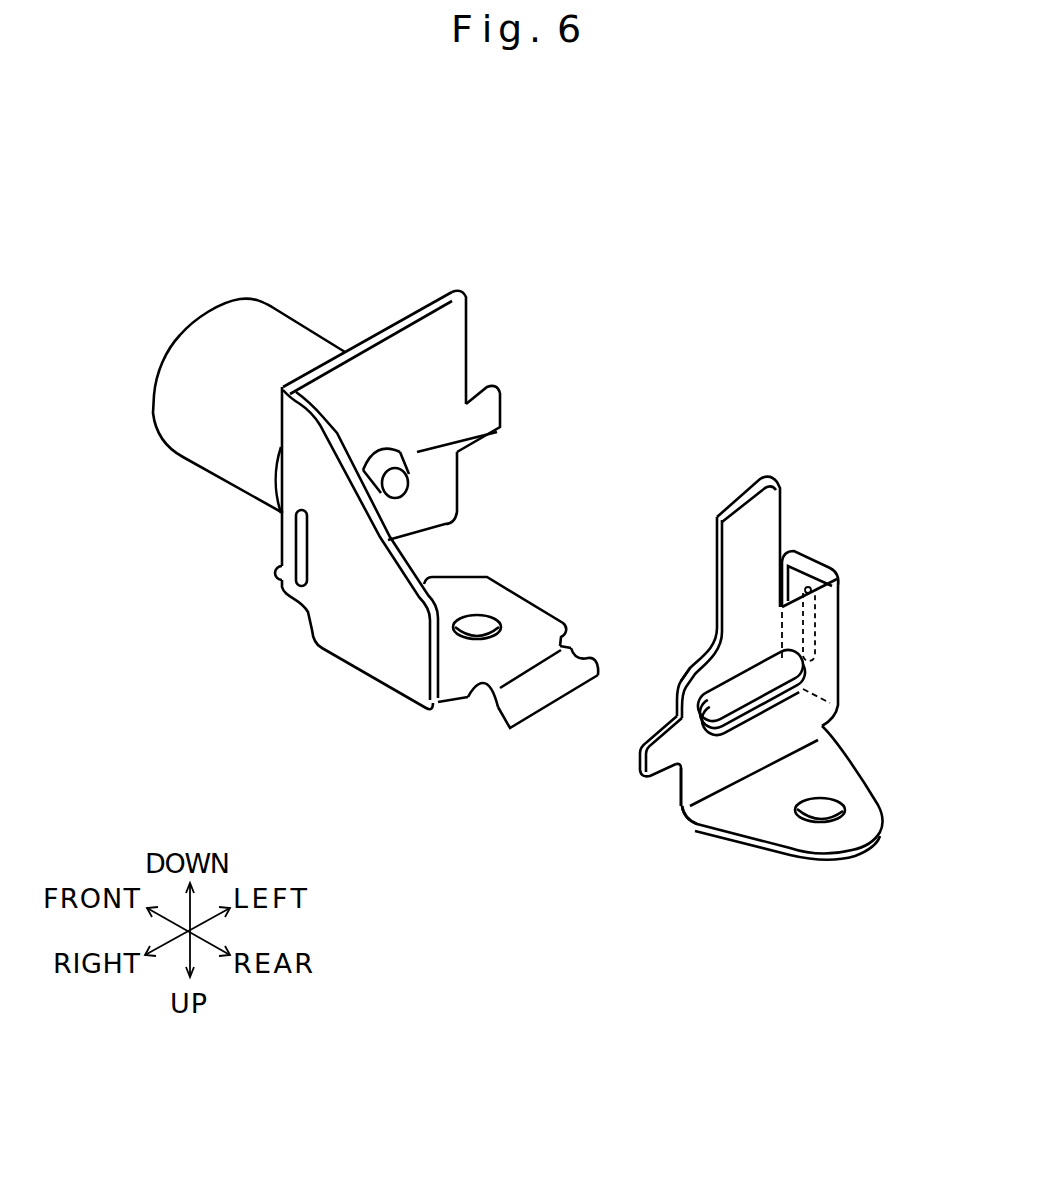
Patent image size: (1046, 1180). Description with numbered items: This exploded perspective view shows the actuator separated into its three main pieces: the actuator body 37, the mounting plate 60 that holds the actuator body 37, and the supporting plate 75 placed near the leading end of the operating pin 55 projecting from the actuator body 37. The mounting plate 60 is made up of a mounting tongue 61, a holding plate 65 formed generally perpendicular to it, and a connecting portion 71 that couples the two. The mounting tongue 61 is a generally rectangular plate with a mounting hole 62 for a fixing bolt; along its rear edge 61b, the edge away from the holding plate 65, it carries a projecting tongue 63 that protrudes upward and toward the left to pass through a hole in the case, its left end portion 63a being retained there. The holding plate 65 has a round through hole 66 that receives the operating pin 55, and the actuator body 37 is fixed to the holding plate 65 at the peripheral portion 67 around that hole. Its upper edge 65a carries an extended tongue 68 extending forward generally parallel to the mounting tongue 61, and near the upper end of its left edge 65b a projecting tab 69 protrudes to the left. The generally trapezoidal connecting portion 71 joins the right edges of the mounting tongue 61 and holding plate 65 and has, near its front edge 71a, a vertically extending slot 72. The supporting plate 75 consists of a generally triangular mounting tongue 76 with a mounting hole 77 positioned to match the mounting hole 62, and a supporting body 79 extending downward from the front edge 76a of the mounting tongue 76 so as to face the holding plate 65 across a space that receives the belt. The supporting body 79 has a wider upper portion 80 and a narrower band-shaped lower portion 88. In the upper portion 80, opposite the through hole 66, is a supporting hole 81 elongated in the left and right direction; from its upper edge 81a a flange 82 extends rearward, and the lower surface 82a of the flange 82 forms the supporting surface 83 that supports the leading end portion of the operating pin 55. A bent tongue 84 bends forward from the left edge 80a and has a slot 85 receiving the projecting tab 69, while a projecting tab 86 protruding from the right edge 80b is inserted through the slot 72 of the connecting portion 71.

The actuator body 37 is at (239, 280).
The mounting plate 60 is at (485, 257).
The holding plate 65 is at (401, 343).
The upper edge 65a is at (431, 528).
The left edge 65b is at (458, 358).
The through hole 66 is at (393, 450).
The peripheral portion 67 is at (500, 431).
The projecting tab 69 is at (490, 406).
The operating pin 55 is at (401, 484).
The connecting portion 71 is at (350, 643).
The front edge 71a is at (280, 518).
The extended tongue 68 is at (272, 578).
The slot 72 is at (302, 583).
The mounting tongue 61 is at (514, 608).
The mounting hole 62 is at (480, 621).
The rear edge 61b is at (490, 678).
The projecting tongue 63 is at (546, 700).
The left end portion 63a is at (594, 678).
The supporting plate 75 is at (848, 515).
The supporting body 79 is at (712, 502).
The upper portion 80 is at (701, 672).
The lower portion 88 is at (737, 556).
The left edge 80a is at (830, 690).
The right edge 80b is at (690, 783).
The supporting hole 81 is at (806, 566).
The upper edge 81a is at (701, 700).
The bent tongue 84 is at (762, 654).
The slot 85 is at (817, 627).
The flange 82 is at (773, 728).
The lower surface 82a is at (827, 696).
The supporting surface 83 is at (820, 712).
The projecting tab 86 is at (646, 760).
The mounting tongue 76 is at (760, 824).
The front edge 76a is at (700, 812).
The mounting hole 77 is at (820, 816).